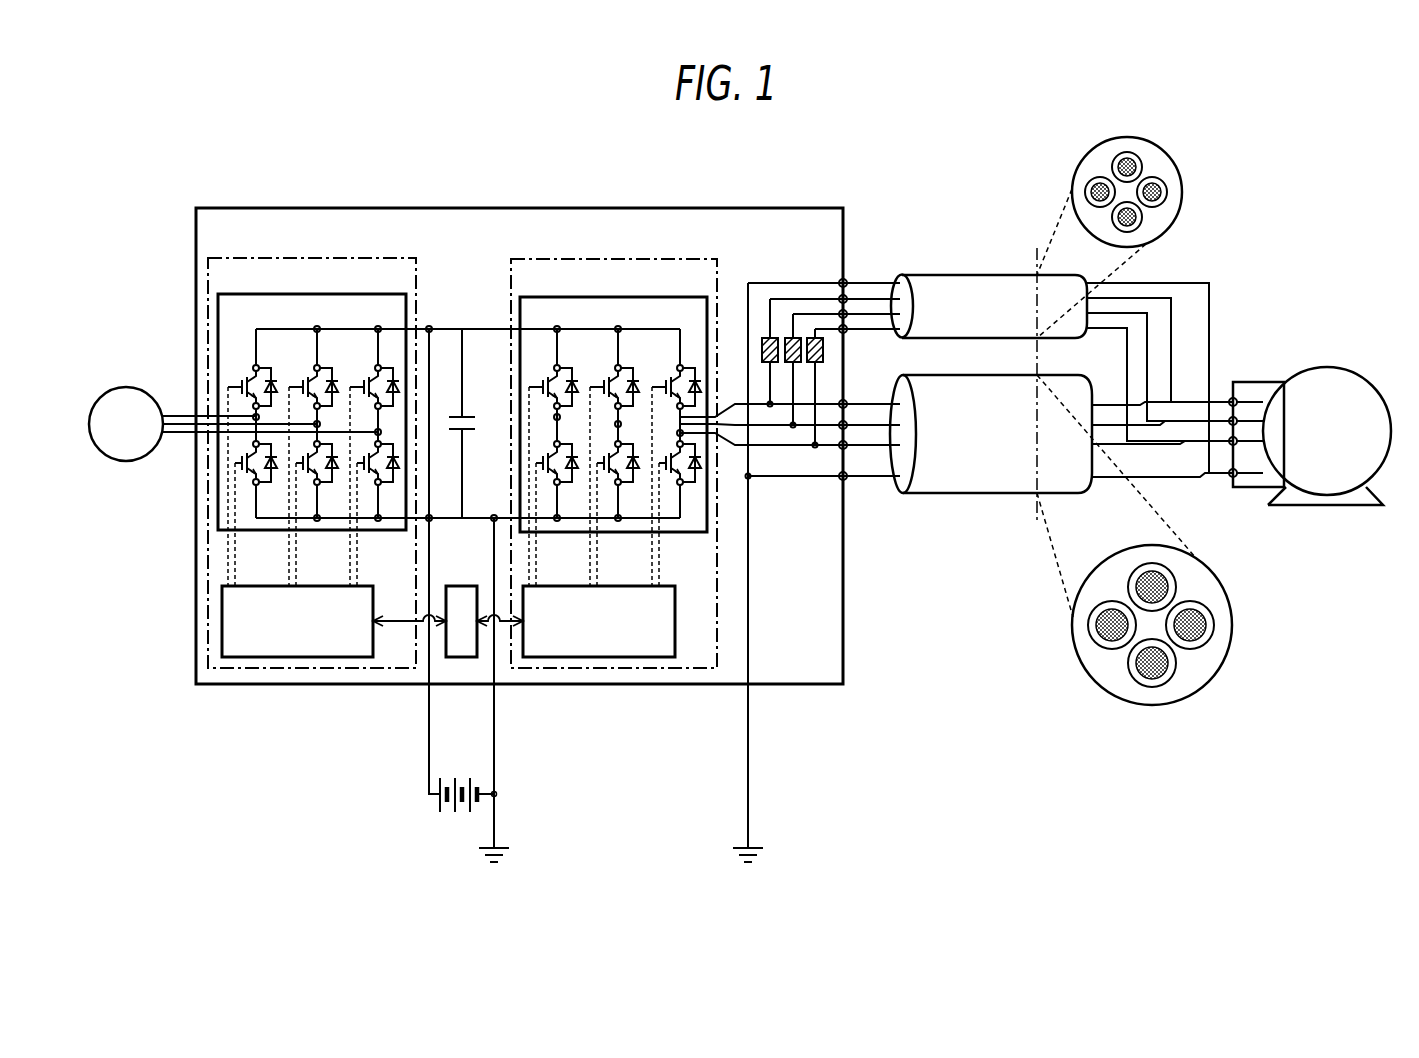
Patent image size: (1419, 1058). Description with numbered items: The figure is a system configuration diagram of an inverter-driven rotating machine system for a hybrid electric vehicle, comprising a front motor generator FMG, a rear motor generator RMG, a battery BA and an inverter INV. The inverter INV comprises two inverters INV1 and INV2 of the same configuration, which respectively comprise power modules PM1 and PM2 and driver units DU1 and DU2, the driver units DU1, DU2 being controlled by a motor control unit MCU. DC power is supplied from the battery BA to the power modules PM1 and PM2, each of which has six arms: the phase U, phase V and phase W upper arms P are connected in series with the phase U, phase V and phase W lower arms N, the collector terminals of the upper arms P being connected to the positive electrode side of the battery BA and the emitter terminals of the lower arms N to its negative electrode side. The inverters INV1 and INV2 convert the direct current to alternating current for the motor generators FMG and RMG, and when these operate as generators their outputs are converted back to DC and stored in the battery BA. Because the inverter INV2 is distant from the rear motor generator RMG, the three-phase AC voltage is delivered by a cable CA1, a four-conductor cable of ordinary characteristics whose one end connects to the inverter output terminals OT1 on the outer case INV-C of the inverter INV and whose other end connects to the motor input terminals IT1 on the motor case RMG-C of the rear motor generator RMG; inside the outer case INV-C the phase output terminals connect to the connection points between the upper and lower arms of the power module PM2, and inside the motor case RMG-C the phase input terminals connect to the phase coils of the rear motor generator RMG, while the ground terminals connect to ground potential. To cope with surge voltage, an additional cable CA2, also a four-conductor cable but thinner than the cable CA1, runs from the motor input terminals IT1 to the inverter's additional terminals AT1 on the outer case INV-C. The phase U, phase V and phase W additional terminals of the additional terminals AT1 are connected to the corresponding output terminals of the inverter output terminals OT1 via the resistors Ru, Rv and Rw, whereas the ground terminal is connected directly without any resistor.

The inverter INV is at (519, 446).
The inverter INV1 is at (312, 463).
The inverter INV2 is at (614, 463).
The power module PM1 is at (312, 440).
The power module PM2 is at (613, 440).
The driver unit DU1 is at (297, 621).
The driver unit DU2 is at (599, 621).
The motor control unit MCU is at (461, 621).
The upper arms P is at (468, 313).
The lower arms N is at (468, 533).
The battery BA is at (468, 595).
The front motor generator FMG is at (233, 424).
The rear motor generator RMG is at (1327, 436).
The motor case RMG-C is at (1258, 382).
The cable CA1 is at (1061, 540).
The additional cable CA2 is at (1062, 305).
The resistor Ru is at (765, 336).
The resistor Rv is at (790, 336).
The resistor Rw is at (812, 336).
The additional terminals AT1 is at (862, 337).
The inverter output terminals OT1 is at (862, 393).
The motor input terminals IT1 is at (1243, 392).
The outer case INV-C is at (843, 637).